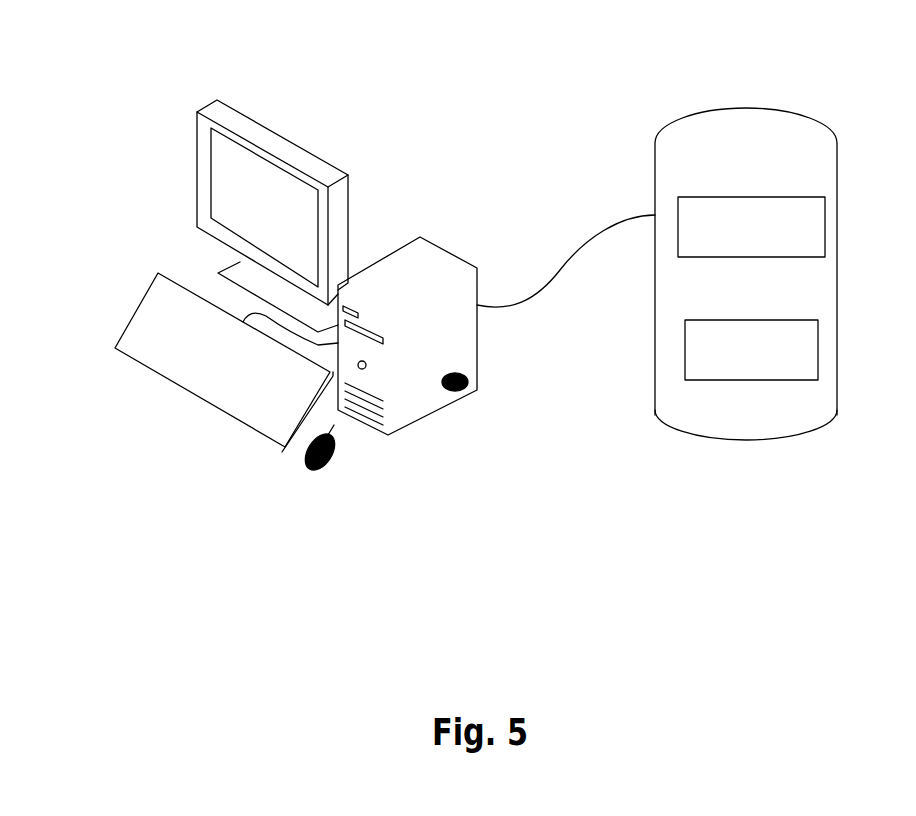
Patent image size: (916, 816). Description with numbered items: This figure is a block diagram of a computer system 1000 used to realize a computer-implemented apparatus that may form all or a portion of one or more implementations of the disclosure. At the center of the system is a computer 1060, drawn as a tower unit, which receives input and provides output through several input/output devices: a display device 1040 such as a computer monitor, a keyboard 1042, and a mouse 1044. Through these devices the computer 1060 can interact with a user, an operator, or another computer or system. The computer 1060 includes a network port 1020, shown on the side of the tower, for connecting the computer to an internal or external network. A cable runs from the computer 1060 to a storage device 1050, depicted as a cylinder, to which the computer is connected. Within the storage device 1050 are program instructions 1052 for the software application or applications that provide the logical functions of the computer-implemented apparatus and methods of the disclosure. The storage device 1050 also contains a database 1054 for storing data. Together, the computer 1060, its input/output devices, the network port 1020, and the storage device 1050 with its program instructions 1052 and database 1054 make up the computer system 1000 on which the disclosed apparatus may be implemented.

The computer system 1000 is at (524, 75).
The display device 1040 is at (279, 124).
The keyboard 1042 is at (130, 317).
The mouse 1044 is at (341, 452).
The computer 1060 is at (440, 240).
The network port 1020 is at (478, 372).
The storage device 1050 is at (838, 148).
The program instructions 1052 is at (825, 225).
The database 1054 is at (818, 352).